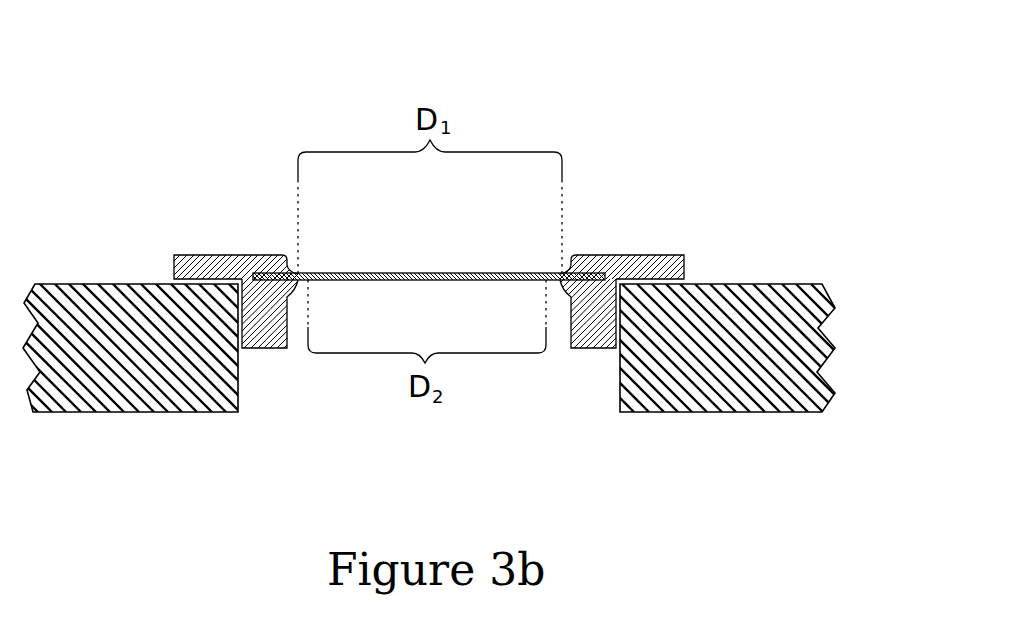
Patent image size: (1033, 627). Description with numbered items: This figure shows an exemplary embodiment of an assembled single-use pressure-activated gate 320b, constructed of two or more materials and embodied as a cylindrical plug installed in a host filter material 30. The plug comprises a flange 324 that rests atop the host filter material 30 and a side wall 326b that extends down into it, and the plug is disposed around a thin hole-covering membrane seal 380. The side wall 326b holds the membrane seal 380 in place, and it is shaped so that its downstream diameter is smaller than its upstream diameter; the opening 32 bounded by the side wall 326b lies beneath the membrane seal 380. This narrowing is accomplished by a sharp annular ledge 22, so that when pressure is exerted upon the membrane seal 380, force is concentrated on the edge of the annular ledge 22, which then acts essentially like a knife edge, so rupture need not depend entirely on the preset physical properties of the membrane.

The pressure-activated gate 320b is at (638, 126).
The flange 324 is at (202, 253).
The side wall 326b is at (260, 350).
The membrane seal 380 is at (458, 273).
The host filter material 30 is at (152, 363).
The opening 32 is at (444, 327).
The sharp annular ledge 22 is at (570, 293).